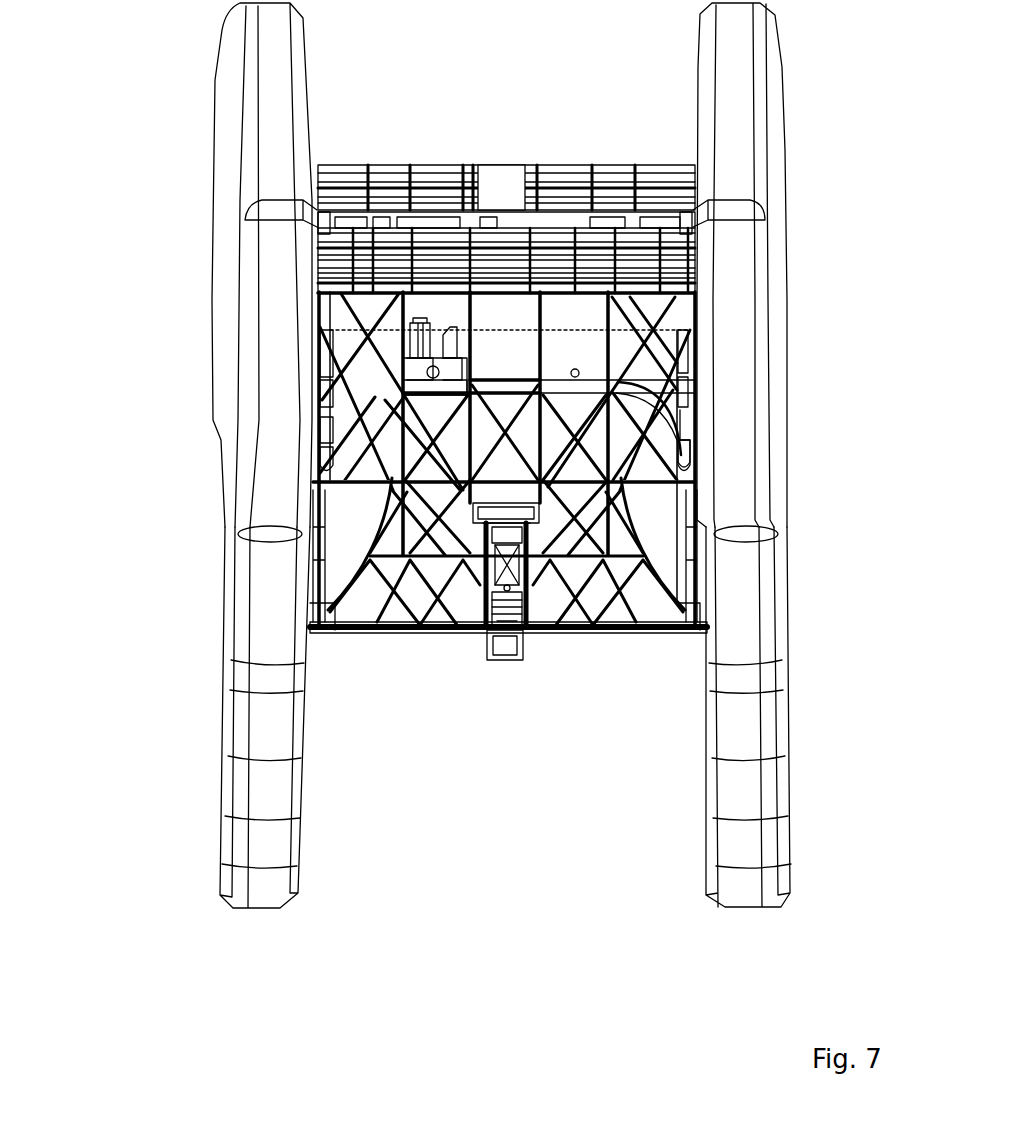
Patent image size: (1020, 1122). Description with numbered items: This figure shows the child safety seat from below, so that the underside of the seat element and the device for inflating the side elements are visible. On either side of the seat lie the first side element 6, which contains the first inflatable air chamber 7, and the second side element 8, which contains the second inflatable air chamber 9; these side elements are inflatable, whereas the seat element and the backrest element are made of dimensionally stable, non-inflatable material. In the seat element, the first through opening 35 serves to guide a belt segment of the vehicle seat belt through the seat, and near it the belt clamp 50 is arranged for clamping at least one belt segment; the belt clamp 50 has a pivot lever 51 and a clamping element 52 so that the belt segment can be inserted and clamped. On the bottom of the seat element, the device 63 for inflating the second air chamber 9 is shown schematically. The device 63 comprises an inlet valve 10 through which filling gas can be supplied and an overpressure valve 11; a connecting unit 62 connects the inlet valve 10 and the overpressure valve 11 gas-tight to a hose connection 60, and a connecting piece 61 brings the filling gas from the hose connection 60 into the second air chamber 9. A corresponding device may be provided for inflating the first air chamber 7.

The first side element 6 is at (260, 890).
The first inflatable air chamber 7 is at (275, 470).
The second side element 8 is at (752, 884).
The second inflatable air chamber 9 is at (733, 472).
The inlet valve 10 is at (457, 337).
The overpressure valve 11 is at (422, 337).
The first through opening 35 is at (372, 565).
The belt clamp 50 is at (527, 630).
The pivot lever 51 is at (503, 660).
The clamping element 52 is at (530, 557).
The hose connection 60 is at (588, 386).
The connecting piece 61 is at (700, 445).
The connecting unit 62 is at (397, 369).
The device for inflating 63 is at (412, 337).